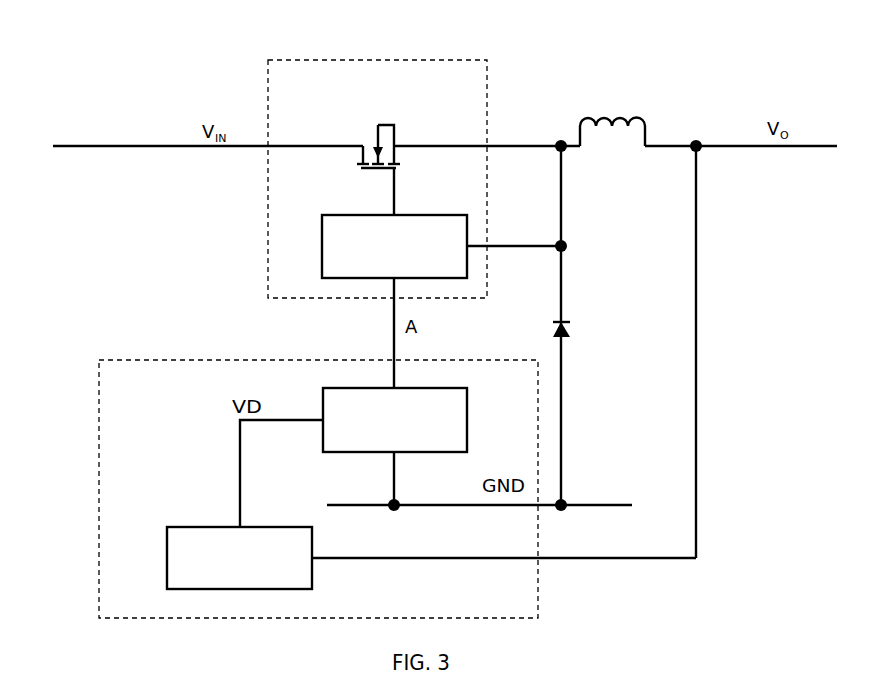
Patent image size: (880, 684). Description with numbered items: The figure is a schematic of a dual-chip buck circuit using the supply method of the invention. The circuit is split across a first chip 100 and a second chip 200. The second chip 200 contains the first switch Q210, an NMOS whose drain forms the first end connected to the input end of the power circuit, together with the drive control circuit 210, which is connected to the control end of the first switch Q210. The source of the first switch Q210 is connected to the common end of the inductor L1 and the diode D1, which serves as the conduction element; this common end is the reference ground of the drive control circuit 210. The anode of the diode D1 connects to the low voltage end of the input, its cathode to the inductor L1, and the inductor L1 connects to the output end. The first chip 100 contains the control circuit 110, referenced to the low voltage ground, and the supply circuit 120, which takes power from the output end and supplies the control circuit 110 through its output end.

The first chip 100 is at (100, 353).
The second chip 200 is at (335, 58).
The control circuit 110 is at (395, 420).
The supply circuit 120 is at (239, 558).
The drive control circuit 210 is at (394, 246).
The first switch Q210 is at (343, 149).
The inductor L1 is at (612, 150).
The diode D1 is at (575, 325).